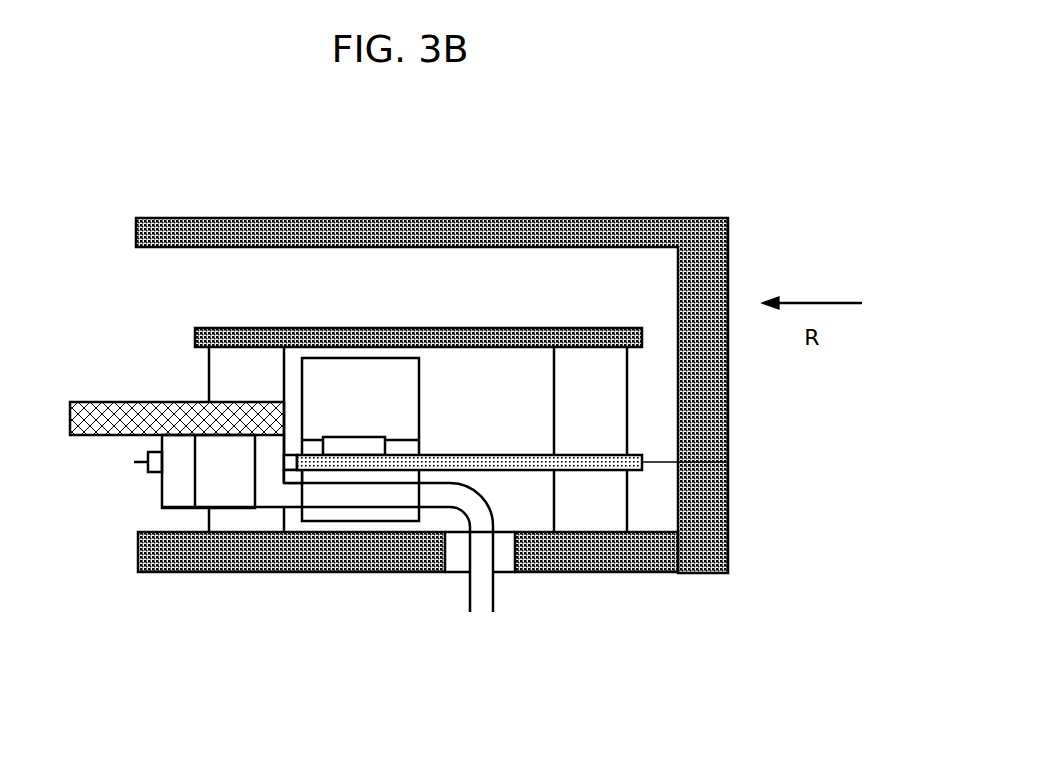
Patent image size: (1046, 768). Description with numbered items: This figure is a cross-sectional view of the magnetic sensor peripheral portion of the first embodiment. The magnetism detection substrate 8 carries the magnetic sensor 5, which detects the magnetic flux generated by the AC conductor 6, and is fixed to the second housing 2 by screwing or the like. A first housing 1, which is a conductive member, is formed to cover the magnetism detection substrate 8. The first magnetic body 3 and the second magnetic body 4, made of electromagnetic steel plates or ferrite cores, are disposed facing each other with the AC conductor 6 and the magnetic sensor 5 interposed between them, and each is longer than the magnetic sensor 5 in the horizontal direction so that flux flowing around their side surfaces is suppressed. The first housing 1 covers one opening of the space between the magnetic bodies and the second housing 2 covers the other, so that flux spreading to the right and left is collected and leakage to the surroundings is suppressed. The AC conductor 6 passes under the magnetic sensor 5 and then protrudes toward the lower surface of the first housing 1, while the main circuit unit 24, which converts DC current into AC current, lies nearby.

The first housing 1 is at (590, 328).
The second housing 2 is at (302, 553).
The first magnetic body 3 is at (360, 338).
The second magnetic body 4 is at (385, 398).
The magnetic sensor 5 is at (342, 443).
The AC conductor 6 is at (475, 578).
The magnetism detection substrate 8 is at (515, 470).
The main circuit unit 24 is at (110, 402).